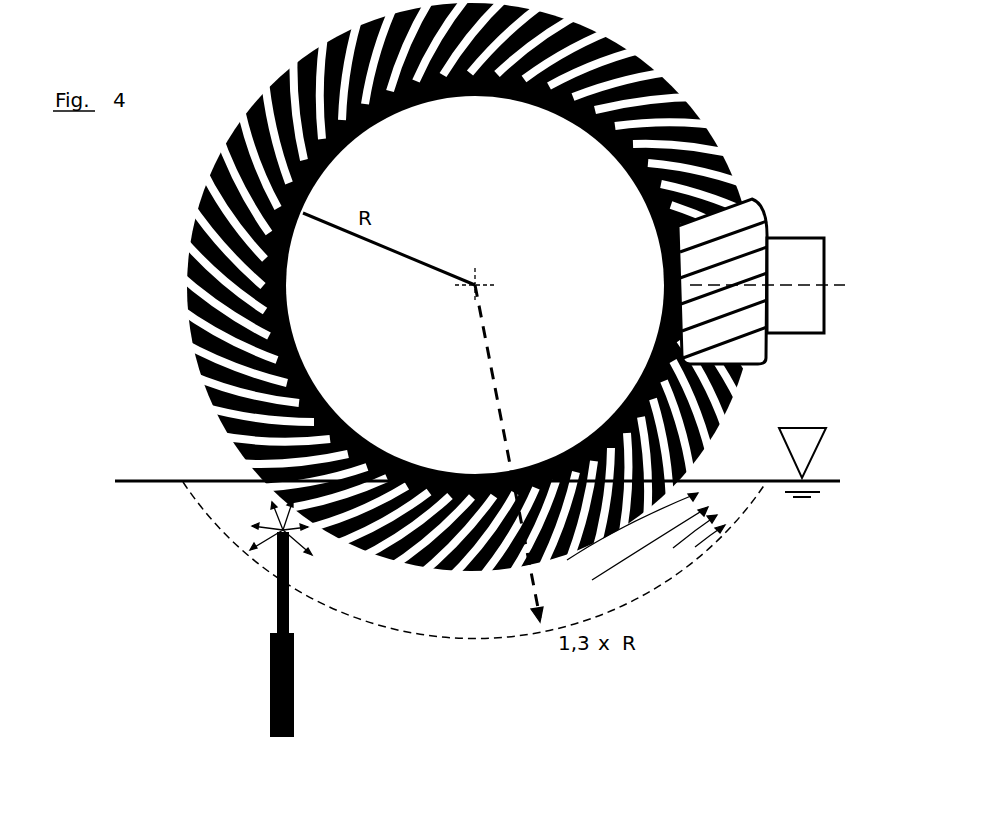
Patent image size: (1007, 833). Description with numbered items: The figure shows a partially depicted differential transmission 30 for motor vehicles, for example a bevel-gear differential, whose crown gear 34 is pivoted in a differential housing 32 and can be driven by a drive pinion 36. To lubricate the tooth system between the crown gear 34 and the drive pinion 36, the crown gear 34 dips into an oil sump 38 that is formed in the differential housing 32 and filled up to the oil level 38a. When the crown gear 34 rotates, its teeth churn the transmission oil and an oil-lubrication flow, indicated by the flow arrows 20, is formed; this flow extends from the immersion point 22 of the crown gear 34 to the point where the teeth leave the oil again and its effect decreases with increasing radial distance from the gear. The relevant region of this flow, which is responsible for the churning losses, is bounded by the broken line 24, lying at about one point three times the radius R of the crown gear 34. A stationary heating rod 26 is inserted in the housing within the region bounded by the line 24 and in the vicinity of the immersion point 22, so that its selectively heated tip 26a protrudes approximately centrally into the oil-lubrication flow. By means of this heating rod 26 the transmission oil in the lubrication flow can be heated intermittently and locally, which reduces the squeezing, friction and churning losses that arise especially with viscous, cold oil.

The flow arrows 20 is at (712, 540).
The immersion point 22 is at (262, 480).
The broken line 24 is at (415, 634).
The heating rod 26 is at (270, 690).
The heated tip 26a is at (282, 533).
The differential transmission 30 is at (800, 138).
The differential housing 32 is at (197, 104).
The crown gear 34 is at (717, 130).
The drive pinion 36 is at (768, 223).
The oil sump 38 is at (185, 652).
The oil level 38a is at (740, 478).